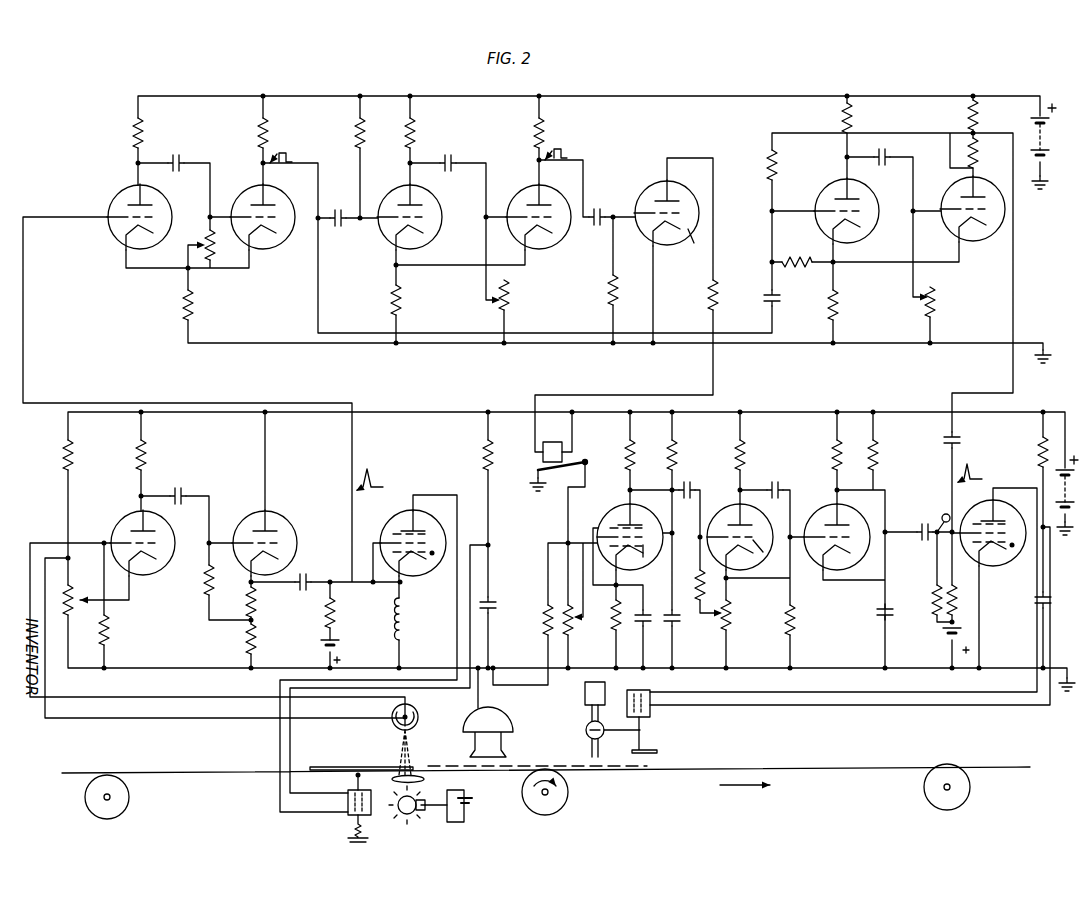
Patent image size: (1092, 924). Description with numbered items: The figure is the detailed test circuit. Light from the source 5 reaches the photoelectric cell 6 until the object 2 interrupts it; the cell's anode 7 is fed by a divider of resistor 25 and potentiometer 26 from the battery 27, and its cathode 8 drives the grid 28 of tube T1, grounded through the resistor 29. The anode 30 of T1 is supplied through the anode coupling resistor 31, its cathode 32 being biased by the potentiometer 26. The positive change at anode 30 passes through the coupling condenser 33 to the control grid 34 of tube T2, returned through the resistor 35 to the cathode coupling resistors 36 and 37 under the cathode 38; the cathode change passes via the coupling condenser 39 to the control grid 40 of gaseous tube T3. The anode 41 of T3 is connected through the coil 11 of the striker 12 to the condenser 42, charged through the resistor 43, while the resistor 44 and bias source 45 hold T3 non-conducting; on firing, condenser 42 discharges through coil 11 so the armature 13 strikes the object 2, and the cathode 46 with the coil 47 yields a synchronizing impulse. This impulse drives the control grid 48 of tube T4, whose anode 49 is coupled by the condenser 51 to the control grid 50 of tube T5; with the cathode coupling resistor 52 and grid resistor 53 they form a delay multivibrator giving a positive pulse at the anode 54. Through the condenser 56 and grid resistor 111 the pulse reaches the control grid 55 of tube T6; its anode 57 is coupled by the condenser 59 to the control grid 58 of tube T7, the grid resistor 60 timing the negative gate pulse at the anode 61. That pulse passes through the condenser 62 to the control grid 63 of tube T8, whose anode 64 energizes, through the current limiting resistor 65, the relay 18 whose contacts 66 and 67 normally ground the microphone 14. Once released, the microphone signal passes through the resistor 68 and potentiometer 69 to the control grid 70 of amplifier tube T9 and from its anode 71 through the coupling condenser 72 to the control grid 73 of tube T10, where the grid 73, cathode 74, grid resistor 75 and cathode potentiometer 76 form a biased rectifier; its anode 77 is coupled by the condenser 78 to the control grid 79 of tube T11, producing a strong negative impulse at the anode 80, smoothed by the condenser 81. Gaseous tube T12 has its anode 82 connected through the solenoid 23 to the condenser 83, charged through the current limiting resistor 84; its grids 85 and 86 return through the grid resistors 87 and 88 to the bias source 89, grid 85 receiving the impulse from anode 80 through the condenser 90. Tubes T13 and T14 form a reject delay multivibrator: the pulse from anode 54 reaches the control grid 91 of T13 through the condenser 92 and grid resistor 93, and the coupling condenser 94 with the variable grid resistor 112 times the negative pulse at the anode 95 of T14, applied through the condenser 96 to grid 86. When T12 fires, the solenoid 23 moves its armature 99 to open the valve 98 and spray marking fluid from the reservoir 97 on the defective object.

The object 2 is at (372, 766).
The light source 5 is at (417, 799).
The photoelectric cell 6 is at (412, 703).
The anode 7 is at (414, 724).
The cathode 8 is at (418, 713).
The coil 11 is at (344, 817).
The striker 12 is at (374, 794).
The armature 13 is at (351, 780).
The microphone 14 is at (497, 716).
The relay 18 is at (548, 423).
The solenoid 23 is at (649, 692).
The resistor 25 is at (73, 449).
The potentiometer 26 is at (78, 592).
The battery 27 is at (1046, 132).
The grid 28 is at (162, 555).
The resistor 29 is at (107, 624).
The anode 30 is at (160, 541).
The anode coupling resistor 31 is at (146, 449).
The cathode 32 is at (156, 570).
The coupling condenser 33 is at (182, 491).
The control grid 34 is at (282, 536).
The resistor 35 is at (204, 584).
The cathode coupling resistor 36 is at (255, 598).
The cathode coupling resistor 37 is at (256, 638).
The cathode 38 is at (286, 555).
The coupling condenser 39 is at (302, 590).
The control grid 40 is at (438, 545).
The anode 41 is at (418, 526).
The condenser 42 is at (494, 602).
The resistor 43 is at (482, 456).
The resistor 44 is at (334, 614).
The source of bias potential 45 is at (341, 639).
The cathode 46 is at (420, 568).
The coil 47 is at (404, 616).
The control grid 48 is at (158, 219).
The anode 49 is at (158, 201).
The control grid 50 is at (273, 219).
The coupling condenser 51 is at (177, 153).
The common cathode coupling resistor 52 is at (194, 300).
The grid resistor 53 is at (216, 249).
The anode 54 is at (271, 201).
The control grid 55 is at (432, 214).
The coupling condenser 56 is at (346, 203).
The anode 57 is at (418, 203).
The control grid 58 is at (562, 230).
The coupling condenser 59 is at (450, 153).
The grid resistor 60 is at (509, 293).
The anode 61 is at (543, 202).
The coupling condenser 62 is at (593, 202).
The control grid 63 is at (678, 241).
The anode 64 is at (673, 194).
The current limiting resistor 65 is at (708, 290).
The relay contact 66 is at (585, 462).
The relay contact 67 is at (537, 468).
The resistor 68 is at (546, 628).
The potentiometer 69 is at (570, 632).
The control grid 70 is at (647, 558).
The anode 71 is at (638, 519).
The coupling condenser 72 is at (684, 484).
The control grid 73 is at (756, 546).
The cathode 74 is at (767, 562).
The grid resistor 75 is at (698, 584).
The cathode potentiometer 76 is at (732, 620).
The anode 77 is at (760, 518).
The coupling condenser 78 is at (778, 484).
The control grid 79 is at (848, 558).
The anode 80 is at (843, 517).
The condenser 81 is at (876, 613).
The anode 82 is at (996, 500).
The condenser 83 is at (1048, 596).
The current limiting resistor 84 is at (1038, 440).
The grid 85 is at (1007, 528).
The grid 86 is at (1010, 548).
The grid resistor 87 is at (932, 596).
The grid resistor 88 is at (955, 592).
The source of bias potential 89 is at (950, 634).
The coupling condenser 90 is at (923, 517).
The control grid 91 is at (864, 212).
The coupling condenser 92 is at (780, 302).
The grid resistor 93 is at (787, 256).
The coupling condenser 94 is at (886, 150).
The anode 95 is at (978, 197).
The coupling condenser 96 is at (956, 440).
The reservoir 97 is at (584, 696).
The valve 98 is at (586, 731).
The armature 99 is at (648, 729).
The grid resistor 111 is at (354, 134).
The variable grid resistor 112 is at (937, 300).
The tube T1 is at (147, 553).
The tube T2 is at (273, 539).
The gaseous discharge device T3 is at (422, 546).
The tube T4 is at (143, 210).
The tube T5 is at (269, 209).
The tube T6 is at (421, 208).
The tube T7 is at (562, 236).
The tube T8 is at (670, 212).
The tube T9 is at (623, 539).
The tube T10 is at (749, 539).
The tube T11 is at (839, 538).
The gaseous discharge device T12 is at (994, 522).
The tube T13 is at (852, 203).
The tube T14 is at (964, 190).